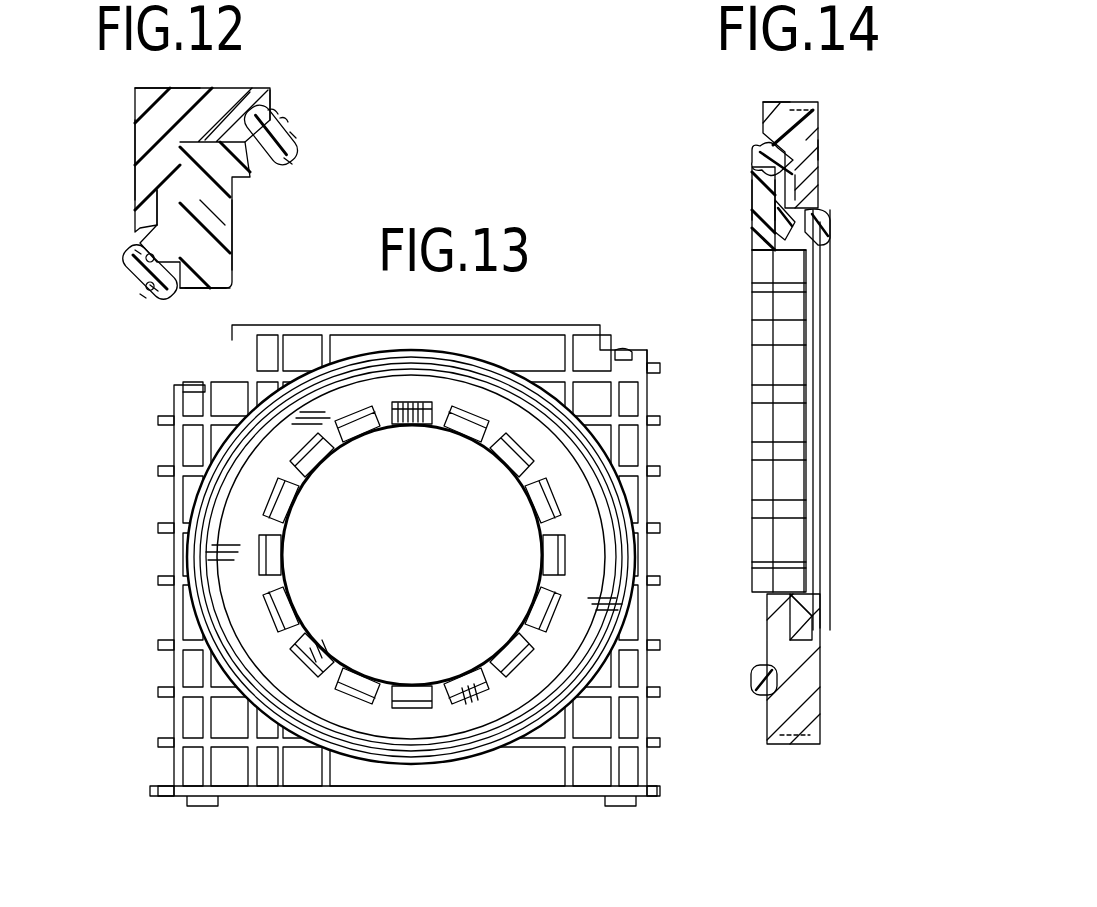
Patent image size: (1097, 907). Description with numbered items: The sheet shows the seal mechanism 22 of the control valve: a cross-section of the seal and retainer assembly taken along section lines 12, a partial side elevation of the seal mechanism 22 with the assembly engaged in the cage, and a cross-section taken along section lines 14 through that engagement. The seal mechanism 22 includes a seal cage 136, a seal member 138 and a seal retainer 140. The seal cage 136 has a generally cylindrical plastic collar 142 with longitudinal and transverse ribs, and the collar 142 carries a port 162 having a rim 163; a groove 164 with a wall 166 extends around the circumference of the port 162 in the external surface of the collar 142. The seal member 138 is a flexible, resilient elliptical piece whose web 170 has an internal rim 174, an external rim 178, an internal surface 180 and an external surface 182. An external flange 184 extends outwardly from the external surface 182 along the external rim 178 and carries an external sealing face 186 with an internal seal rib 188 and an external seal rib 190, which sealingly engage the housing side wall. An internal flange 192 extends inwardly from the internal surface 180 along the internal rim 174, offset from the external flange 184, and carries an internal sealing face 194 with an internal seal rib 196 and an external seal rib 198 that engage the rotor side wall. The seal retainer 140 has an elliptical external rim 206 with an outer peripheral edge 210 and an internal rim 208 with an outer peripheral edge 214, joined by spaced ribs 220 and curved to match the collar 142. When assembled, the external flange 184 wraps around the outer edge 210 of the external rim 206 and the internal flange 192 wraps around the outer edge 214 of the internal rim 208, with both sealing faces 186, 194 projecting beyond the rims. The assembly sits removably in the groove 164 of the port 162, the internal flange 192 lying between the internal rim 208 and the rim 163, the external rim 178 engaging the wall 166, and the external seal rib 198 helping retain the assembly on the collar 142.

In FIG. 12, the section lines 12— 12 is at (352, 22).
In FIG. 13, the section lines 14— 14 is at (378, 813).
In FIG. 13, the seal mechanism 22 is at (442, 558).
In FIG. 14, the seal mechanism 22 is at (712, 112).
In FIG. 13, the seal cage 136 is at (660, 360).
In FIG. 14, the seal cage 136 is at (768, 730).
In FIG. 12, the seal member 138 is at (236, 273).
In FIG. 13, the seal member 138 is at (600, 512).
In FIG. 14, the seal member 138 is at (760, 196).
In FIG. 12, the seal retainer 140 is at (130, 125).
In FIG. 13, the seal retainer 140 is at (586, 524).
In FIG. 14, the seal retainer 140 is at (748, 248).
In FIG. 13, the collar 142 is at (652, 398).
In FIG. 14, the collar 142 is at (822, 118).
In FIG. 14, the port 162 is at (822, 642).
In FIG. 14, the rim 163 is at (808, 196).
In FIG. 14, the groove 164 is at (819, 150).
In FIG. 14, the wall 166 is at (780, 102).
In FIG. 12, the web 170 is at (215, 215).
In FIG. 12, the internal rim 174 is at (222, 105).
In FIG. 12, the external rim 178 is at (214, 282).
In FIG. 12, the internal surface 180 is at (232, 245).
In FIG. 12, the external surface 182 is at (180, 200).
In FIG. 12, the external flange 184 is at (185, 282).
In FIG. 12, the external sealing face 186 is at (126, 293).
In FIG. 13, the external sealing face 186 is at (620, 570).
In FIG. 14, the external sealing face 186 is at (750, 158).
In FIG. 12, the internal seal rib 188 is at (136, 252).
In FIG. 12, the external seal rib 190 is at (140, 298).
In FIG. 12, the internal flange 192 is at (262, 172).
In FIG. 12, the internal sealing face 194 is at (292, 128).
In FIG. 14, the internal sealing face 194 is at (866, 206).
In FIG. 12, the internal seal rib 196 is at (292, 164).
In FIG. 12, the external seal rib 198 is at (282, 110).
In FIG. 12, the external rim 206 is at (135, 160).
In FIG. 14, the external rim 206 is at (762, 218).
In FIG. 12, the internal rim 208 is at (272, 98).
In FIG. 14, the internal rim 208 is at (825, 262).
In FIG. 12, the outer peripheral edge 210 is at (158, 290).
In FIG. 12, the outer peripheral edge 214 is at (296, 138).
In FIG. 12, the ribs 220 is at (200, 88).
In FIG. 14, the ribs 220 is at (770, 284).